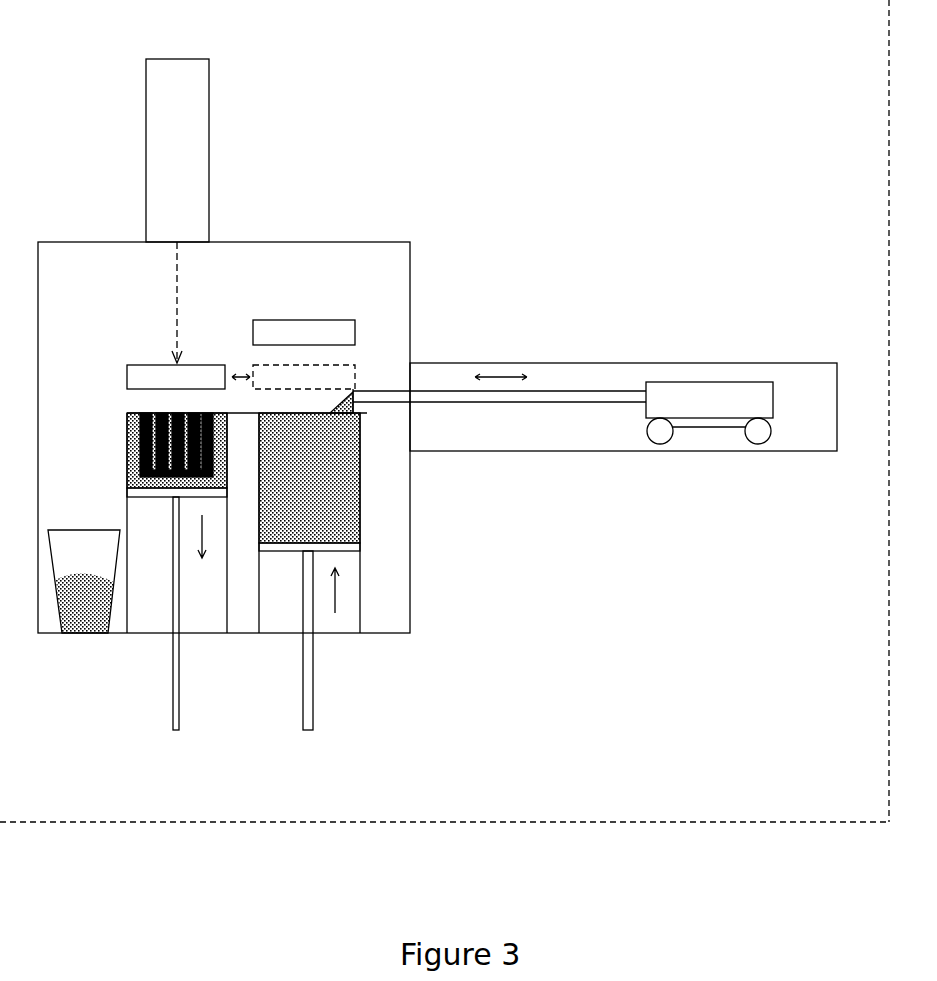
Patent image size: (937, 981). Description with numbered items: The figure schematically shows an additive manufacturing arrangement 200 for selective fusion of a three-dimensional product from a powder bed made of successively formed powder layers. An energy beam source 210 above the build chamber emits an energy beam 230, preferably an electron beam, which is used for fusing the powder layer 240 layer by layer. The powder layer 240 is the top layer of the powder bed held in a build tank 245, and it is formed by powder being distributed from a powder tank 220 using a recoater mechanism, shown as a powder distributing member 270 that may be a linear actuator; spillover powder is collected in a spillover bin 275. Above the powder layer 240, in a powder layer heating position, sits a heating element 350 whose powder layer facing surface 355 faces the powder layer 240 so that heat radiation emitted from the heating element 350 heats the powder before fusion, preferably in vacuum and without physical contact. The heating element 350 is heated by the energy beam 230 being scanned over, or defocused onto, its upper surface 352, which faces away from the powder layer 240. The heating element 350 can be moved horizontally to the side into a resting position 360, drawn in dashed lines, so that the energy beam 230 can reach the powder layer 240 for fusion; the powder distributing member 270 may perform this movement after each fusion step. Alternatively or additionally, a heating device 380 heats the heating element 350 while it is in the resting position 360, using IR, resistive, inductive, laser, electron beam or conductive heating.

The additive manufacturing arrangement 200 is at (798, 49).
The energy beam source 210 is at (209, 140).
The powder tank 220 is at (360, 473).
The energy beam 230 is at (177, 275).
The powder layer 240 is at (135, 412).
The build tank 245 is at (127, 478).
The powder distributing member 270 is at (708, 382).
The spillover bin 275 is at (84, 635).
The heating element 350 is at (200, 365).
The upper surface 352 is at (127, 365).
The powder layer facing surface 355 is at (127, 389).
The resting position 360 is at (355, 375).
The heating device 380 is at (333, 320).